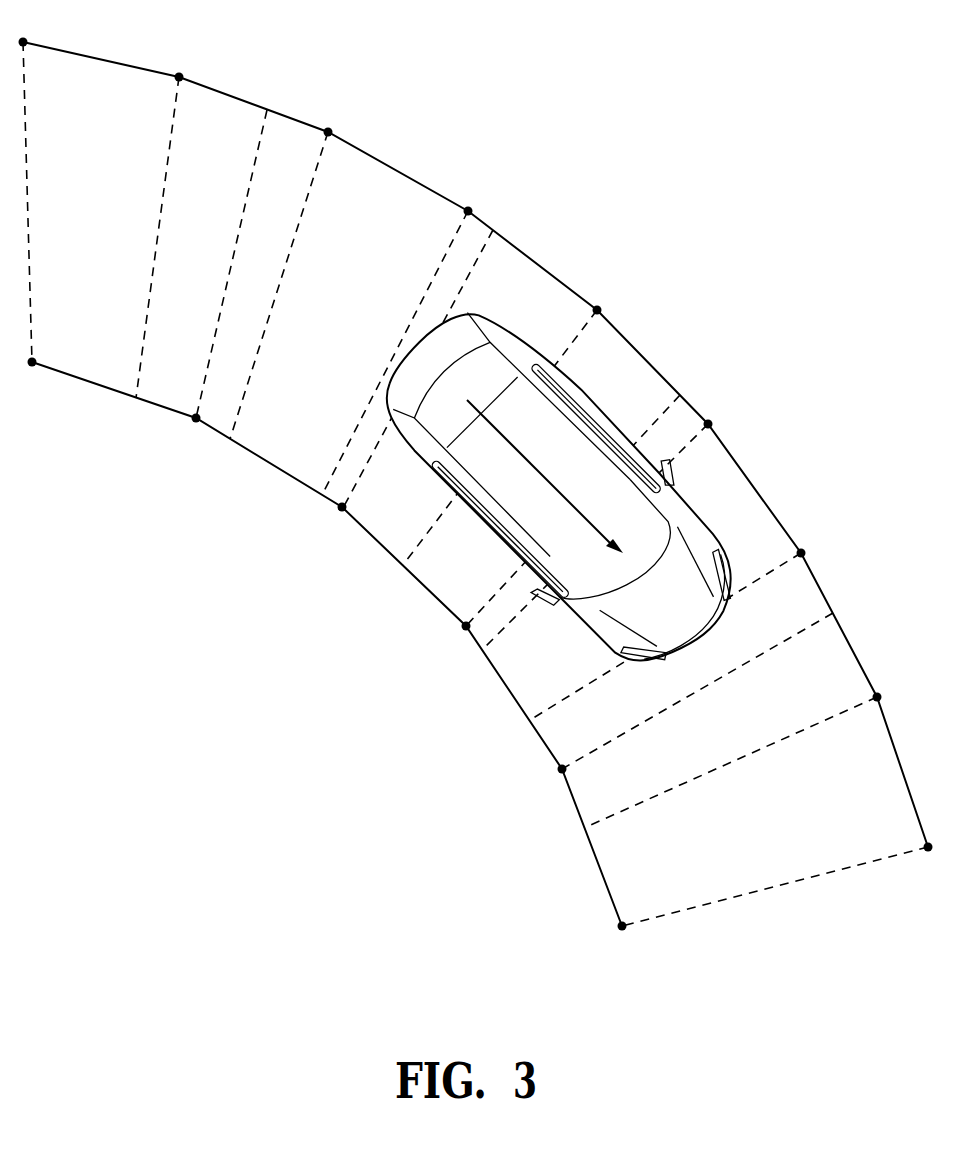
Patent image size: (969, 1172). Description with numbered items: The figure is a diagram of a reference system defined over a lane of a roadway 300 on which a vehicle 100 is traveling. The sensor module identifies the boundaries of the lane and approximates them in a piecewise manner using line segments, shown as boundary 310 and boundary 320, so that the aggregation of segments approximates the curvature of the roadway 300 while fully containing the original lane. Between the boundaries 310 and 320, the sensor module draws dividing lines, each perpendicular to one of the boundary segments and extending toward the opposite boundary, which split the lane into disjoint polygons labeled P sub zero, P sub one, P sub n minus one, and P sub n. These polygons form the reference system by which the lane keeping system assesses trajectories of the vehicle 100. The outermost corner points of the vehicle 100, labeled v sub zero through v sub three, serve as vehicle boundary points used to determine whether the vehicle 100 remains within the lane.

The vehicle 100 is at (572, 461).
The roadway 300 is at (476, 466).
The boundary 310 is at (627, 333).
The boundary 320 is at (445, 606).